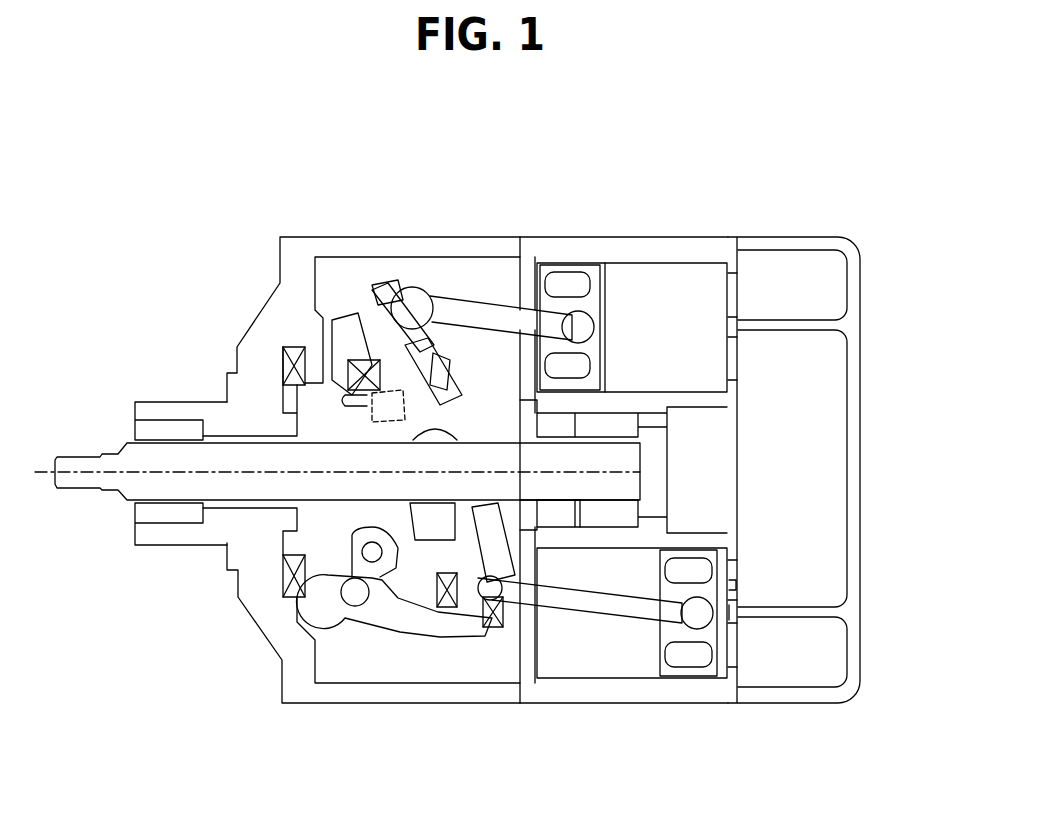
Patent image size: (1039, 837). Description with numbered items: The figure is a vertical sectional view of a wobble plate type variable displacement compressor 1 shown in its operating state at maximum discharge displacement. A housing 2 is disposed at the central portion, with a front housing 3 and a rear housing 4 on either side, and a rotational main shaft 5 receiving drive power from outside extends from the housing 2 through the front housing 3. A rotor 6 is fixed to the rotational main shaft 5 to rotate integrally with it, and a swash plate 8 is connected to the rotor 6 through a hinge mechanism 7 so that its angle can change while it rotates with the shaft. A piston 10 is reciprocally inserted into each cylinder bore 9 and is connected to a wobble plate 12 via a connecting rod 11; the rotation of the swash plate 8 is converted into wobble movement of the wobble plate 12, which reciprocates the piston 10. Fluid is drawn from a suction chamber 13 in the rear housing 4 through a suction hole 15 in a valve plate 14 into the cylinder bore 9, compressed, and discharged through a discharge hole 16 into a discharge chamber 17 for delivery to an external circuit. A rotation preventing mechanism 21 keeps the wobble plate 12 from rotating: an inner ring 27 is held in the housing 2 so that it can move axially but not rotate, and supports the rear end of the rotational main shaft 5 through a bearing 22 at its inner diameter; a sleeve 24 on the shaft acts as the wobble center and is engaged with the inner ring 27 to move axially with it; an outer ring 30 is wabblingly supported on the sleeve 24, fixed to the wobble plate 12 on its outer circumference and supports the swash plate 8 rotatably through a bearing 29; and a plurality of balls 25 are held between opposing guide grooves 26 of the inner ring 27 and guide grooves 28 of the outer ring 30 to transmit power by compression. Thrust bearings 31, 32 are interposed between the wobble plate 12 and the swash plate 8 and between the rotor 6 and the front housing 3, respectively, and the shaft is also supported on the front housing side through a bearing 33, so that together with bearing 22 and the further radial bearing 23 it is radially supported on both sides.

The wobble plate type variable displacement compressor 1 is at (727, 203).
The housing 2 is at (678, 247).
The front housing 3 is at (167, 413).
The rear housing 4 is at (795, 243).
The rotational main shaft 5 is at (265, 482).
The rotor 6 is at (322, 530).
The hinge mechanism 7 is at (348, 627).
The swash plate 8 is at (348, 343).
The cylinder bore 9 is at (647, 263).
The piston 10 is at (598, 312).
The connecting rod 11 is at (412, 307).
The wobble plate 12 is at (500, 583).
The suction chamber 13 is at (822, 655).
The valve plate 14 is at (730, 612).
The suction hole 15 is at (728, 658).
The discharge hole 16 is at (732, 582).
The discharge chamber 17 is at (798, 432).
The rotation preventing mechanism of wobble plate 21 is at (492, 752).
The bearing (radial bearing) 22 is at (553, 497).
The bearing (radial bearing) 23 is at (445, 503).
The sleeve 24 is at (427, 508).
The ball 25 is at (408, 417).
The guide groove of inner ring 26 is at (452, 367).
The inner ring 27 is at (456, 610).
The guide groove of outer ring 28 is at (370, 418).
The bearing (radial bearing) 29 is at (353, 375).
The outer ring 30 is at (452, 527).
The thrust bearing 31 is at (365, 318).
The thrust bearing 32 is at (292, 375).
The bearing (radial bearing) 33 is at (268, 438).